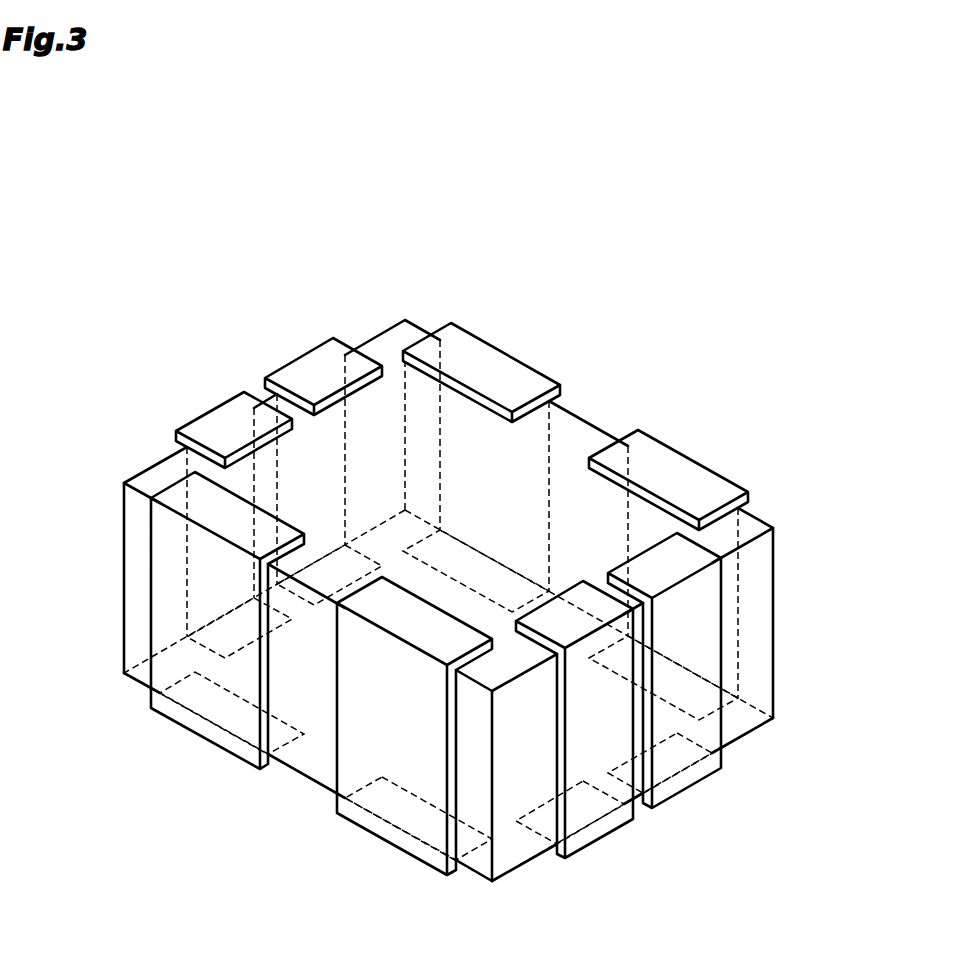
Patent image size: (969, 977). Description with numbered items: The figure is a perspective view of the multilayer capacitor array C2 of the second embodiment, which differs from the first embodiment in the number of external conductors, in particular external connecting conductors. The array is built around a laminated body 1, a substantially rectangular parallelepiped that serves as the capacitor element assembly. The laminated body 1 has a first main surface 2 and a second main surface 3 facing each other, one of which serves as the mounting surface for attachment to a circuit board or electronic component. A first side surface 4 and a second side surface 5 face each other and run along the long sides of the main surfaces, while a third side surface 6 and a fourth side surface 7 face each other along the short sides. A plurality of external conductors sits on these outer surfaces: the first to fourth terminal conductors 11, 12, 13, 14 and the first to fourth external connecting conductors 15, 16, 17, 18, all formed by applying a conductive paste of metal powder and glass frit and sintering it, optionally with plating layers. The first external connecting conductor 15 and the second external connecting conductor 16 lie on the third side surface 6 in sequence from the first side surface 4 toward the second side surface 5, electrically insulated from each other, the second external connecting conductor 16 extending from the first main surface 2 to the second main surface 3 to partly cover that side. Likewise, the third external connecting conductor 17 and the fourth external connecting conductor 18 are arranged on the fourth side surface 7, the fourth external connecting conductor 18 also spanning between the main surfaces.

The multilayer capacitor array C2 is at (732, 298).
The laminated body 1 is at (777, 601).
The first main surface 2 is at (572, 437).
The second main surface 3 is at (507, 838).
The first side surface 4 is at (753, 660).
The second side surface 5 is at (322, 748).
The third side surface 6 is at (128, 584).
The fourth side surface 7 is at (752, 712).
The first terminal conductor 11 is at (503, 351).
The second terminal conductor 12 is at (197, 742).
The third terminal conductor 13 is at (682, 452).
The fourth terminal conductor 14 is at (380, 845).
The first external connecting conductor 15 is at (294, 357).
The second external connecting conductor 16 is at (201, 414).
The third external connecting conductor 17 is at (699, 790).
The fourth external connecting conductor 18 is at (600, 840).